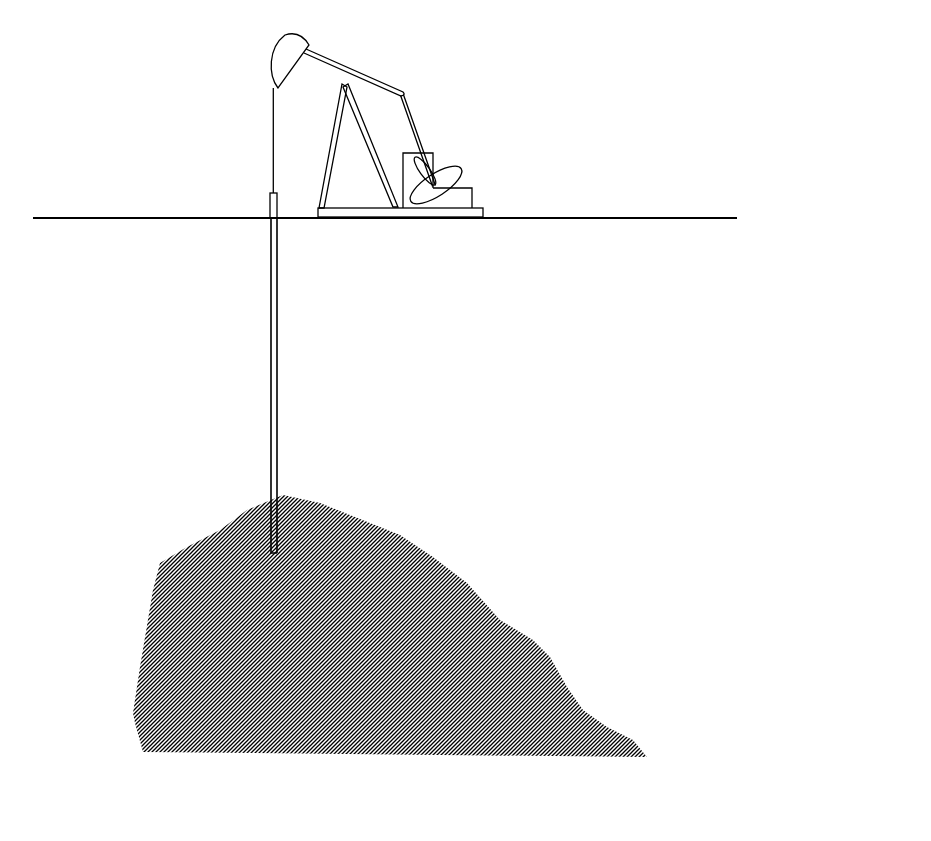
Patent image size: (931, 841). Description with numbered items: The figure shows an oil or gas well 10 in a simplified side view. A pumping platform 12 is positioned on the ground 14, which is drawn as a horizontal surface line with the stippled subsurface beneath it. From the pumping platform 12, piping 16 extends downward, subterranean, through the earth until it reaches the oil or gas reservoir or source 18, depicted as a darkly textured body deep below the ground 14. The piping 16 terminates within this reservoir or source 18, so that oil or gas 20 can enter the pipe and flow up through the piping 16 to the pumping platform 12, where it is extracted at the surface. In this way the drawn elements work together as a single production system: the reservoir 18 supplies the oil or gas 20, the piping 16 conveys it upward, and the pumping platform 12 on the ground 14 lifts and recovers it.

The oil or gas well 10 is at (123, 75).
The pumping platform 12 is at (350, 70).
The ground 14 is at (557, 217).
The piping 16 is at (270, 335).
The oil or gas reservoir or source 18 is at (335, 664).
The oil or gas 20 is at (277, 400).